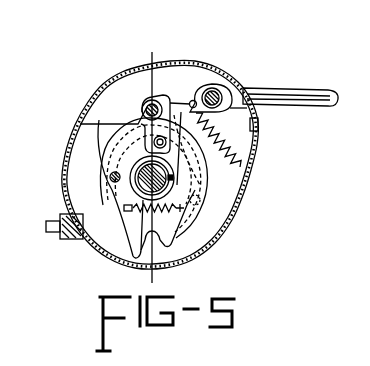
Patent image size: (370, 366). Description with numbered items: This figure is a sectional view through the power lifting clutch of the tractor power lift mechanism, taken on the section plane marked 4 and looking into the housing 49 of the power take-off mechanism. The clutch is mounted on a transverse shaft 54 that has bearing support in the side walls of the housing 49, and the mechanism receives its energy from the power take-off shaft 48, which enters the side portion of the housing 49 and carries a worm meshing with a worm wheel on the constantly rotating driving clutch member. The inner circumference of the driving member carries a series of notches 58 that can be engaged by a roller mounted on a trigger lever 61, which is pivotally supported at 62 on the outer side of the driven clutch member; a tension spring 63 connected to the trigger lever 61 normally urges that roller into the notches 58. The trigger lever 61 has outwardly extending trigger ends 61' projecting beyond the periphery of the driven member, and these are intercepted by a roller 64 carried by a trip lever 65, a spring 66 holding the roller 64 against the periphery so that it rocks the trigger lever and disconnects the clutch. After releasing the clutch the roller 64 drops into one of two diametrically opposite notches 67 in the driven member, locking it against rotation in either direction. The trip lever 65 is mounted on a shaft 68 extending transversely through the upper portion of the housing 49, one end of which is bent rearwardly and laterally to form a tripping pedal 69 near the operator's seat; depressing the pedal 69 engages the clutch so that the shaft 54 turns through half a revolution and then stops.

The section line 4- 4 is at (152, 52).
The power take-off shaft 48 is at (52, 221).
The housing 49 is at (243, 197).
The transverse shaft 54 is at (175, 177).
The notches 58 is at (185, 195).
The trigger lever 61 is at (108, 182).
The trigger ends 61' is at (147, 151).
The pivot 62 is at (112, 184).
The tension spring 63 is at (160, 216).
The roller 64 is at (145, 106).
The trip lever 65 is at (194, 101).
The spring 66 is at (240, 142).
The notches 67 is at (172, 252).
The shaft 68 is at (218, 89).
The tripping pedal 69 is at (302, 98).